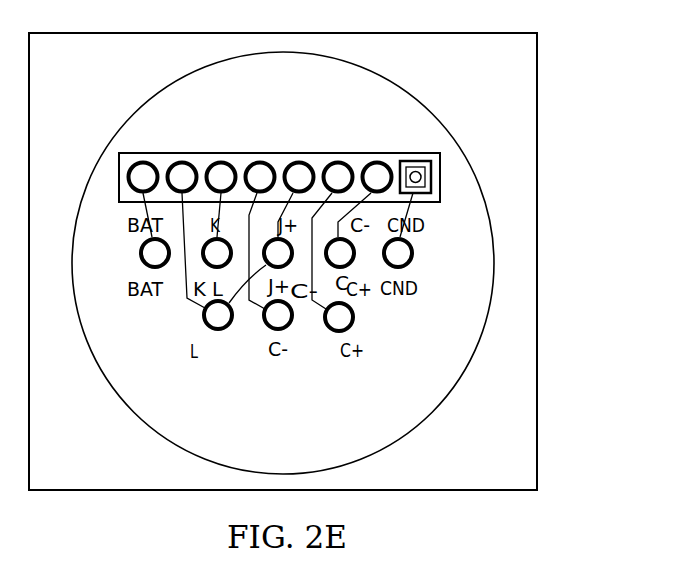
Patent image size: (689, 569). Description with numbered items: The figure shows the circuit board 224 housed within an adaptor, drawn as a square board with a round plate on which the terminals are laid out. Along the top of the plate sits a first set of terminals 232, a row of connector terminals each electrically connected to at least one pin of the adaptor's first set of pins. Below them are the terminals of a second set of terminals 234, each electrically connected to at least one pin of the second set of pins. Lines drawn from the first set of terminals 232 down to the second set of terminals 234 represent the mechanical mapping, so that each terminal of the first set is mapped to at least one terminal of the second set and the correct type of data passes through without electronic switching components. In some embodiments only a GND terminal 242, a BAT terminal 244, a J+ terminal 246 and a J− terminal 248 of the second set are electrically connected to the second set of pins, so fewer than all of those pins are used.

The circuit board 224 is at (562, 63).
The first set of terminals 232 is at (280, 153).
The second set of terminals 234 is at (355, 318).
The GND terminal 242 is at (413, 257).
The BAT terminal 244 is at (139, 254).
The J+ terminal 246 is at (208, 325).
The J− terminal 248 is at (264, 329).